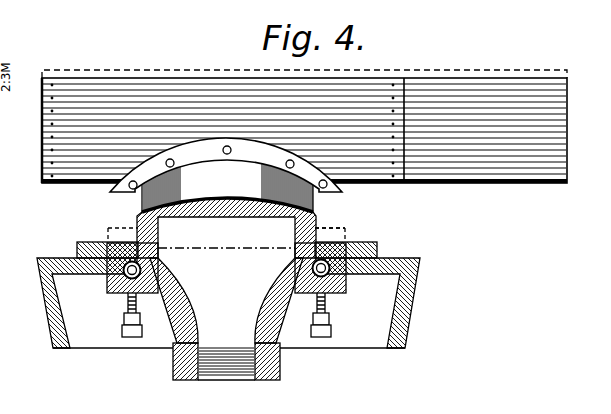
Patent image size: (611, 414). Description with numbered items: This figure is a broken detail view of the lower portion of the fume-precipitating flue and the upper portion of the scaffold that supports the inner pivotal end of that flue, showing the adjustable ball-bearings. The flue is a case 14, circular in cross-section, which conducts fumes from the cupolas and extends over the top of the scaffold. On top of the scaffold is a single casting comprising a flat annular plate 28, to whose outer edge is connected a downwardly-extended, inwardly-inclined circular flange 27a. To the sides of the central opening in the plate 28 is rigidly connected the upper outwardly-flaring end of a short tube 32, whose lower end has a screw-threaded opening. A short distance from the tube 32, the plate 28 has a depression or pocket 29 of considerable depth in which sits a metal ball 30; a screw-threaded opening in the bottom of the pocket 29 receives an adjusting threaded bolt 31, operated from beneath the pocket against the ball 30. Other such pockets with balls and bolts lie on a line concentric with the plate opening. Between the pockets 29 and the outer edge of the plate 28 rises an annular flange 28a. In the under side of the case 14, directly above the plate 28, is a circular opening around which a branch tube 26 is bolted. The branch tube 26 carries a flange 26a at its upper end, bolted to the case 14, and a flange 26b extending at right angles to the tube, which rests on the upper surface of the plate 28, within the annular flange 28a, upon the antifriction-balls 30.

The case 14 is at (568, 133).
The branch tube 26 is at (227, 187).
The flange 26a is at (340, 195).
The flange 26b is at (334, 230).
The circular flange 27a is at (94, 303).
The flat annular plate 28 is at (409, 255).
The annular flange 28a is at (376, 237).
The pocket 29 is at (117, 280).
The metal ball 30 is at (141, 269).
The adjusting threaded bolt 31 is at (122, 328).
The short tube 32 is at (253, 321).